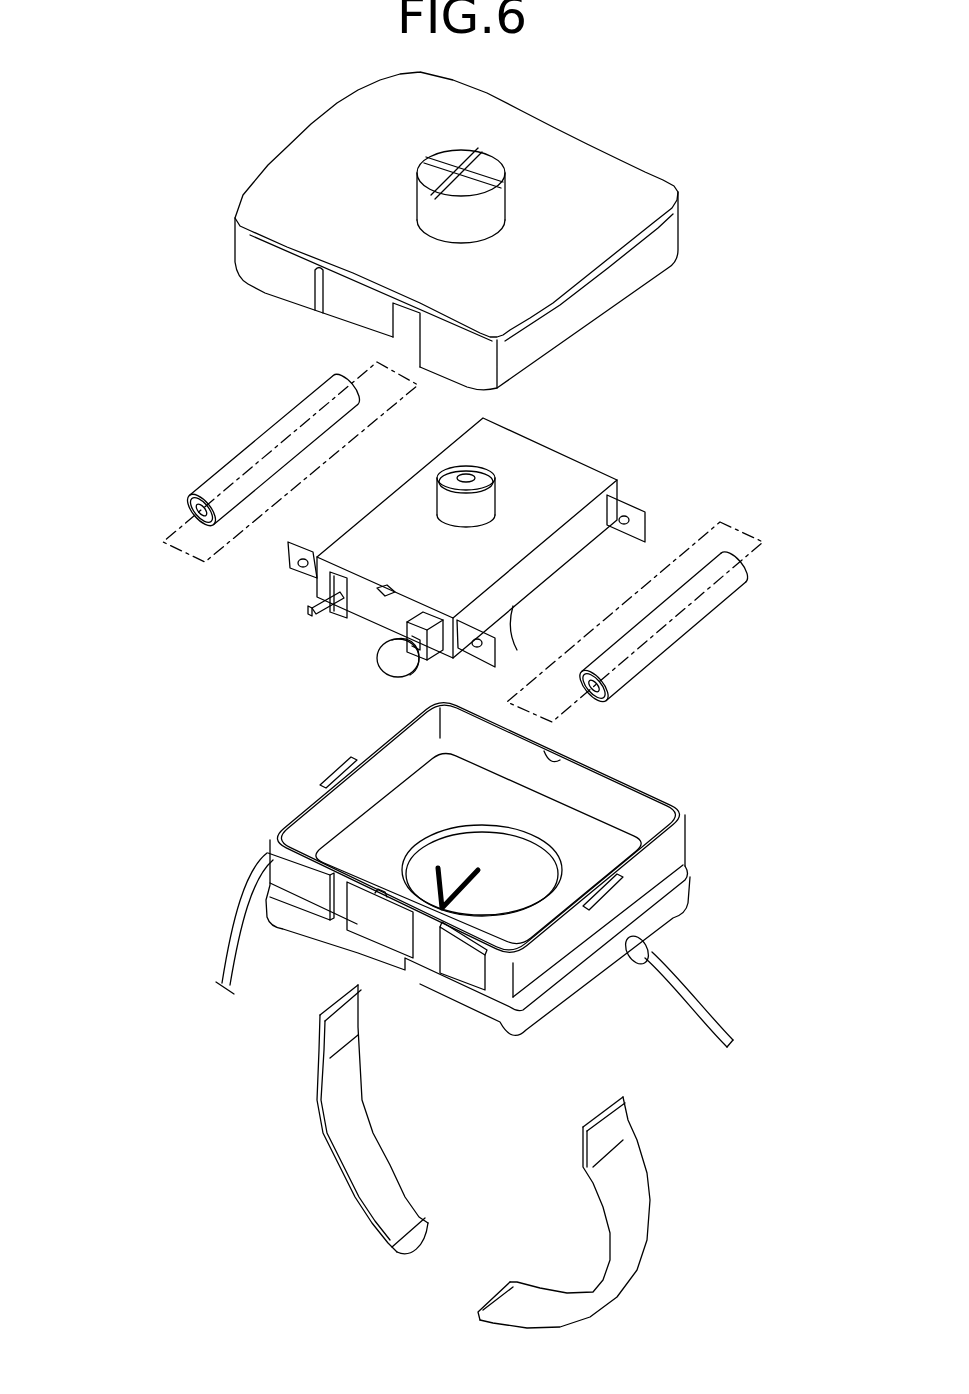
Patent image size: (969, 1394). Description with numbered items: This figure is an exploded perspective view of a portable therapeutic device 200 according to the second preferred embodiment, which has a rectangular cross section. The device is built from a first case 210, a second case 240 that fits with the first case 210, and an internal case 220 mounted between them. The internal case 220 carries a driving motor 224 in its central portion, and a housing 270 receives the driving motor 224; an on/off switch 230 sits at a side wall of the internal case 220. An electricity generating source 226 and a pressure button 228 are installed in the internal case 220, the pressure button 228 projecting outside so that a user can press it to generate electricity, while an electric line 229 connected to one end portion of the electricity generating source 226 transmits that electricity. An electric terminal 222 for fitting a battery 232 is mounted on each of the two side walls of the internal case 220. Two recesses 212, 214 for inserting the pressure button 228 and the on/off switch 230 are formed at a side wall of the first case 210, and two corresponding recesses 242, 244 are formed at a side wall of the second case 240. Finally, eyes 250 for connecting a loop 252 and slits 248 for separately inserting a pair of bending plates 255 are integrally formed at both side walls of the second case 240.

The lighting device assembly 200 is at (738, 110).
The first case 210 is at (578, 272).
The recess 212 is at (402, 327).
The recess 214 is at (313, 313).
The internal case 220 is at (587, 482).
The electric terminal 222 is at (646, 527).
The driving motor 224 is at (482, 465).
The electricity generating source 226 is at (386, 618).
The pressure button 228 is at (387, 667).
The electric line 229 is at (525, 617).
The on/off switch 230 is at (313, 617).
The battery 232 is at (217, 487).
The second case 240 is at (643, 812).
The recess 242 is at (440, 957).
The recess 244 is at (330, 915).
The slit 248 is at (333, 772).
The eye 250 is at (647, 937).
The loop 252 is at (708, 1028).
The bending plate 255 is at (363, 1178).
The housing 270 is at (432, 168).